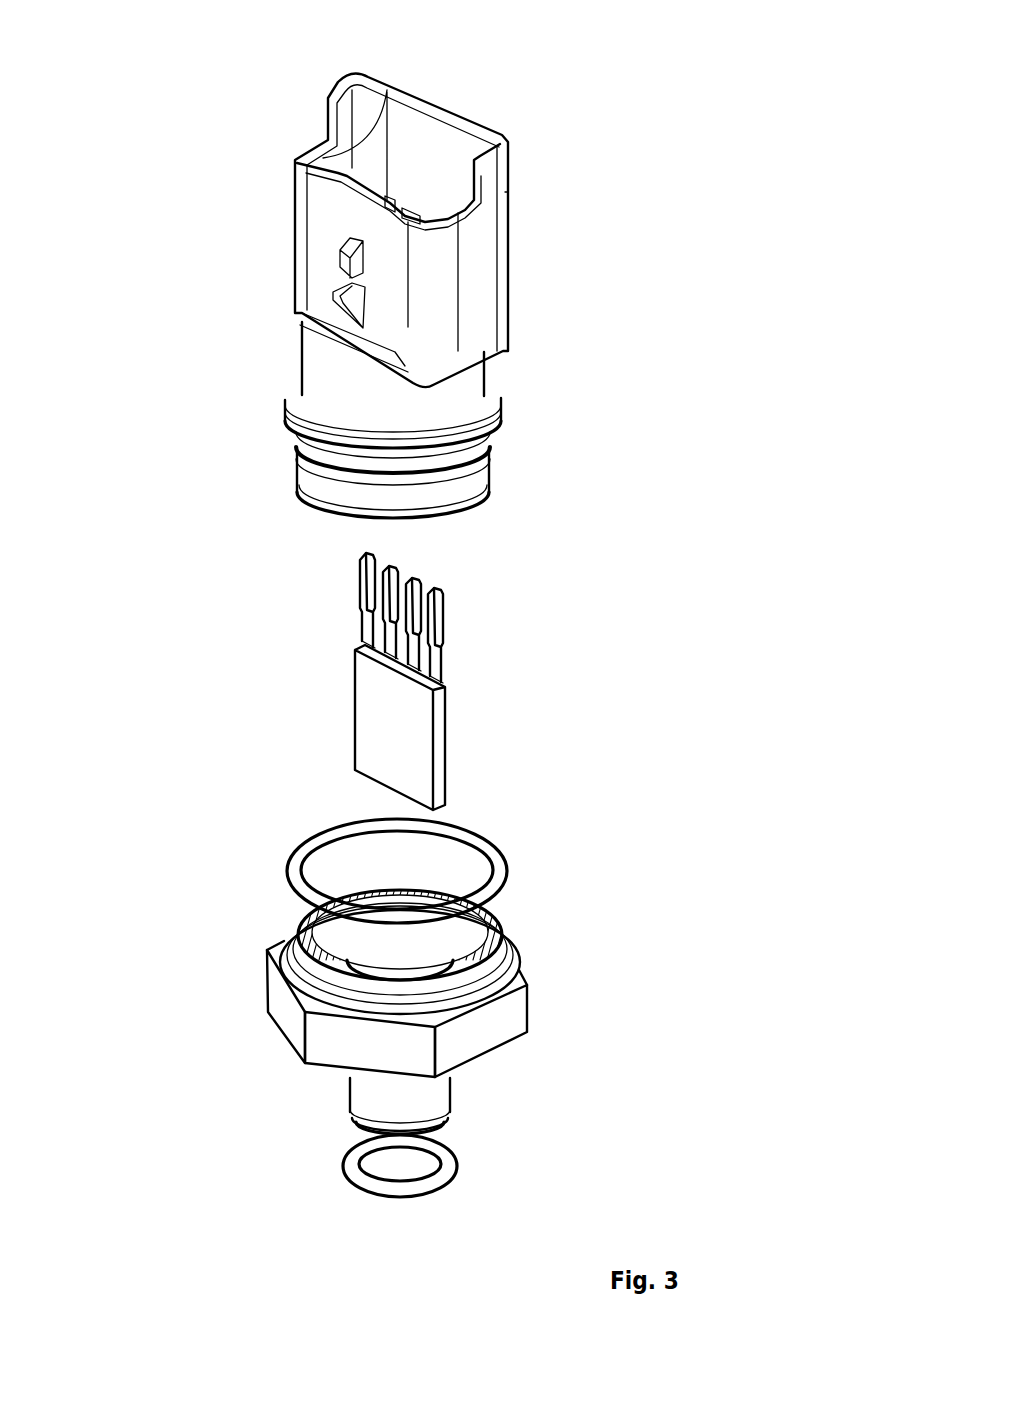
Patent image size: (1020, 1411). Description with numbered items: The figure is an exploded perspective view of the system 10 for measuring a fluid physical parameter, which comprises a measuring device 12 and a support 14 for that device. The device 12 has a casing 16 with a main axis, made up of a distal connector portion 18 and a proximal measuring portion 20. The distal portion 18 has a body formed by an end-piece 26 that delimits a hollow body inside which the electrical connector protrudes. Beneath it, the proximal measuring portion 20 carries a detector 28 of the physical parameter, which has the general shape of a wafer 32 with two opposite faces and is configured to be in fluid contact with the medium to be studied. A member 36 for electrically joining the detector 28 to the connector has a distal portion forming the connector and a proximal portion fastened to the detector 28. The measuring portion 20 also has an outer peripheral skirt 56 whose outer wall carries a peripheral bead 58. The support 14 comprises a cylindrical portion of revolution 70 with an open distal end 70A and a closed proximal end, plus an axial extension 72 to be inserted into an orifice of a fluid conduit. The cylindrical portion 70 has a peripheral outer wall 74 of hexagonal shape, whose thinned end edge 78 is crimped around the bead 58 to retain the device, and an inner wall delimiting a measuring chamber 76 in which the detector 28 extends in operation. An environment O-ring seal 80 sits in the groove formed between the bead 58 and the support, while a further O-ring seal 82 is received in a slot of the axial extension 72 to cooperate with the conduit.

The system 10 is at (690, 73).
The device for measuring the fluid physical parameter 12 is at (518, 265).
The support 14 is at (549, 1003).
The casing 16 is at (307, 297).
The distal connector portion 18 is at (322, 222).
The proximal measuring portion 20 is at (320, 488).
The end-piece 26 is at (337, 82).
The detector 28 is at (458, 724).
The wafer 32 is at (353, 693).
The member for electrically joining 36 is at (452, 635).
The outer peripheral skirt 56 is at (477, 495).
The peripheral bead 58 is at (497, 437).
The cylindrical portion of revolution 70 is at (260, 988).
The open distal end 70A is at (288, 927).
The axial extension 72 is at (397, 1108).
The peripheral outer wall 74 is at (338, 1063).
The measuring chamber 76 is at (468, 952).
The end edge 78 is at (292, 947).
The environment O-ring seal 80 is at (507, 872).
The O-ring seal 82 is at (343, 1167).